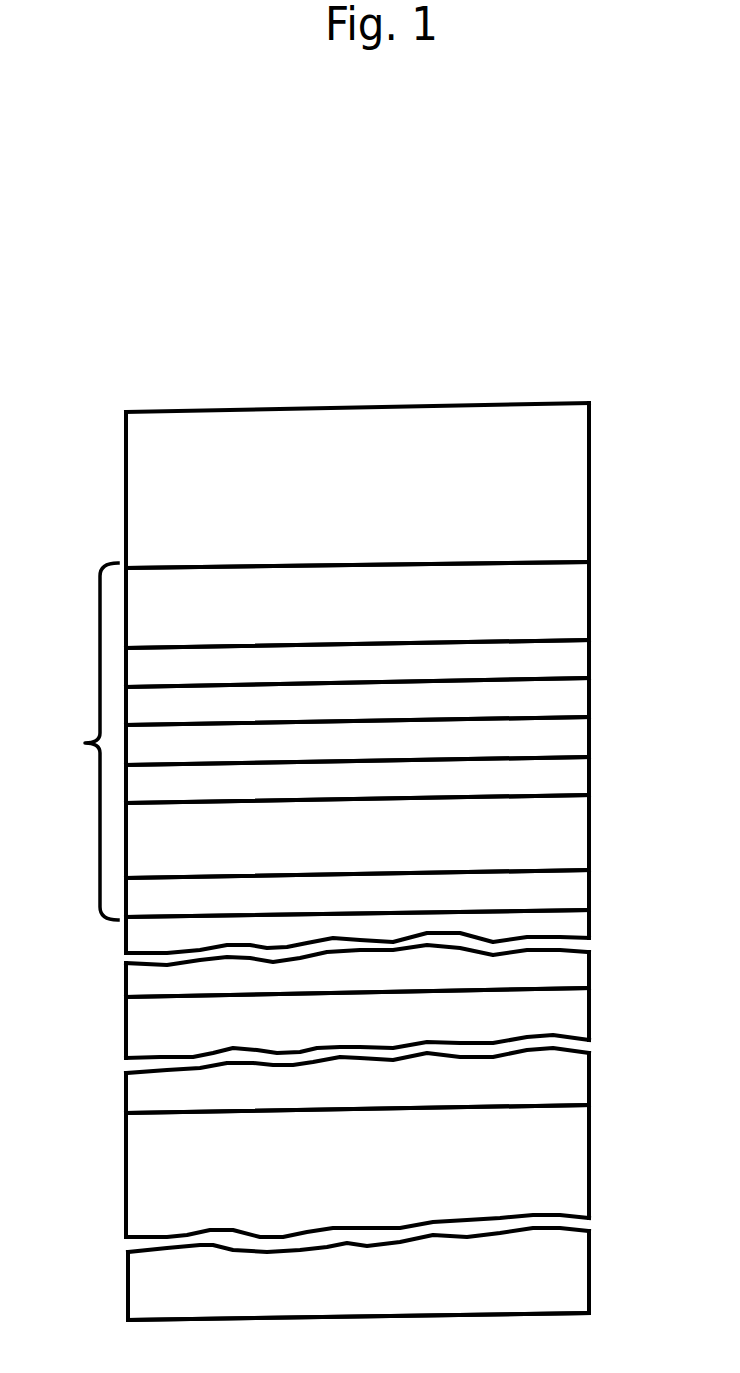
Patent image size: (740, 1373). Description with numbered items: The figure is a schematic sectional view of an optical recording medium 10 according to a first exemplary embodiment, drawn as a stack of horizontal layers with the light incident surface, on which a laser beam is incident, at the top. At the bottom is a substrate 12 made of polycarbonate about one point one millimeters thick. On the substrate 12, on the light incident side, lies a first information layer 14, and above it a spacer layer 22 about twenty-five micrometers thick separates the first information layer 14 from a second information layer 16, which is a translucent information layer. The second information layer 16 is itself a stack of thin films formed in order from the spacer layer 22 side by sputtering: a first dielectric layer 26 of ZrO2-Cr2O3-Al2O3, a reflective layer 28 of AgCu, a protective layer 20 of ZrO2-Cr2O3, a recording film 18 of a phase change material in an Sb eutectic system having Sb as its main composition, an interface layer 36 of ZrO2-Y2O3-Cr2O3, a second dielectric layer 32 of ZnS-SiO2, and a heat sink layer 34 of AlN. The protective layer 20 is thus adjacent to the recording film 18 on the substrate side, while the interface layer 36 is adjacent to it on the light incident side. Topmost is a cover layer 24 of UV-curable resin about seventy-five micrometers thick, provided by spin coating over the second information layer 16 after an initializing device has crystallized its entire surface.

The optical recording medium 10 is at (364, 352).
The substrate 12 is at (597, 1106).
The first information layer 14 is at (596, 990).
The second information layer 16 is at (80, 741).
The recording film 18 is at (580, 740).
The protective layer 20 is at (580, 774).
The spacer layer 22 is at (596, 907).
The cover layer 24 is at (580, 476).
The first dielectric layer 26 is at (580, 886).
The reflective layer 28 is at (580, 832).
The second dielectric layer 32 is at (580, 658).
The heat sink layer 34 is at (580, 603).
The interface layer 36 is at (580, 696).